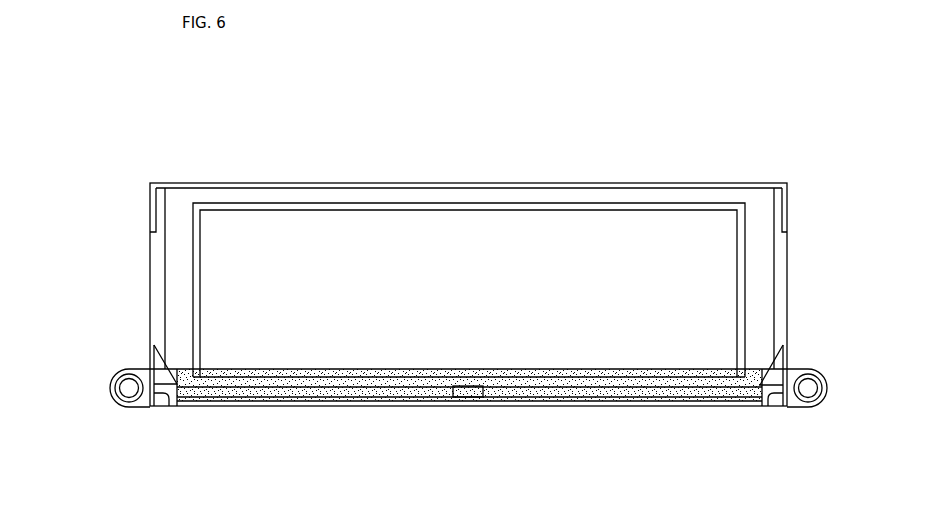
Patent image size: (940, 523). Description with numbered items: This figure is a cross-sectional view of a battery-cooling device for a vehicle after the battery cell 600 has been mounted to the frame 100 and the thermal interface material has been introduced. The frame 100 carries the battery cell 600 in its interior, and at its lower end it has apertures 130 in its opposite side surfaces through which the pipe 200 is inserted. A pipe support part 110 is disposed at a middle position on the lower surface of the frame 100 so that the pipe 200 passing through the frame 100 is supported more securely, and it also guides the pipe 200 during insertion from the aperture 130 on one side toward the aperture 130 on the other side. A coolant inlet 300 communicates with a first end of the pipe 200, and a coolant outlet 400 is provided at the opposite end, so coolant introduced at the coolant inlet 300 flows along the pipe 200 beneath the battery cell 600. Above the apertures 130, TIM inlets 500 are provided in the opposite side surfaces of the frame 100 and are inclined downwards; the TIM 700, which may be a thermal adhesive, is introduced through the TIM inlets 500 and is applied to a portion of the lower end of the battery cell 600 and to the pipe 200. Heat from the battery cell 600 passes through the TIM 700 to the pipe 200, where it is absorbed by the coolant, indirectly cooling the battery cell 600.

The frame 100 is at (160, 193).
The pipe support part 110 is at (468, 393).
The aperture 130 is at (166, 393).
The pipe 200 is at (312, 393).
The coolant inlet 300 is at (110, 387).
The coolant outlet 400 is at (828, 388).
The TIM inlet 500 is at (177, 369).
The battery cell 600 is at (550, 220).
The TIM 700 is at (379, 388).